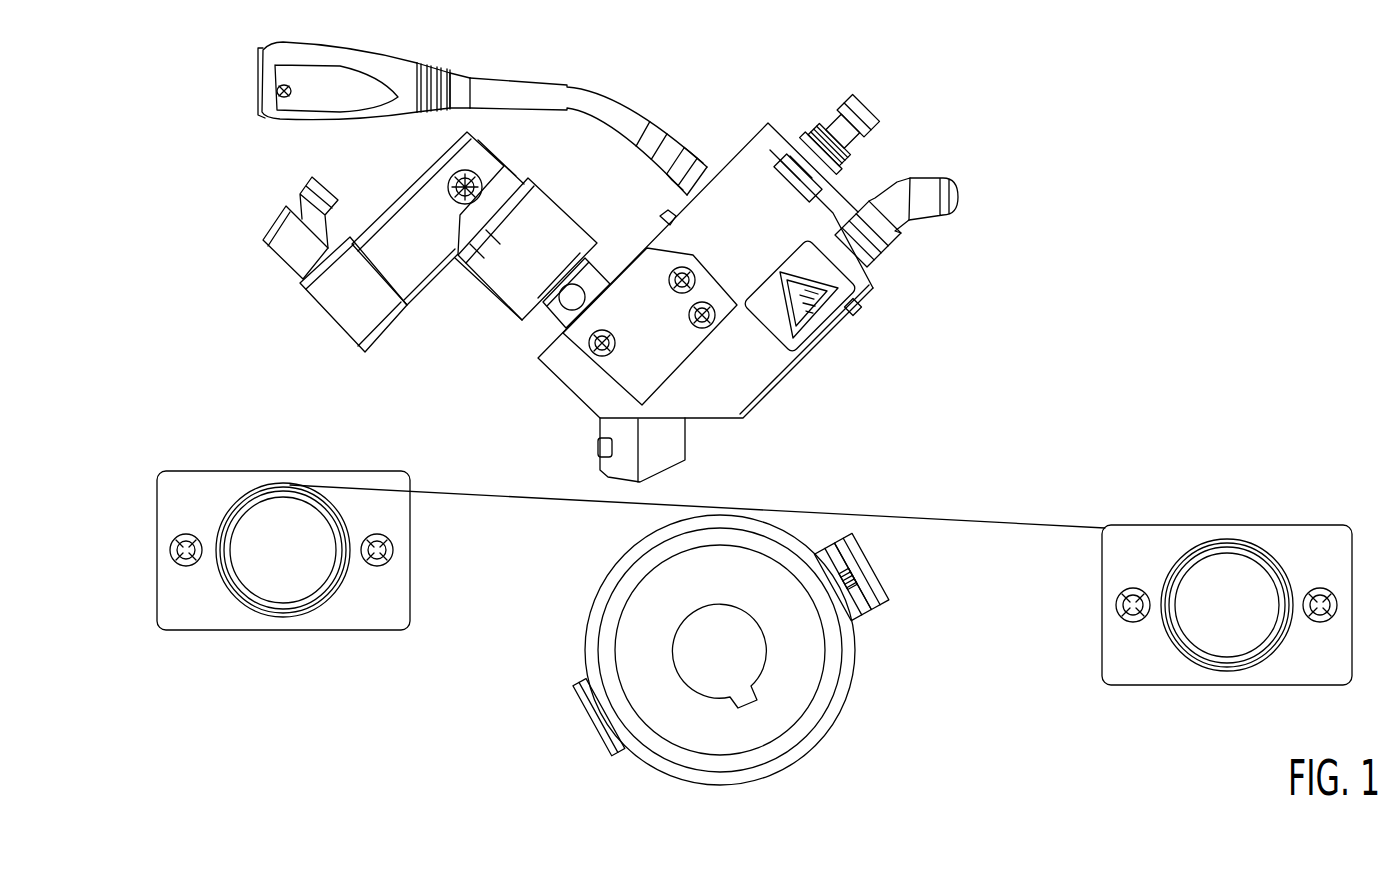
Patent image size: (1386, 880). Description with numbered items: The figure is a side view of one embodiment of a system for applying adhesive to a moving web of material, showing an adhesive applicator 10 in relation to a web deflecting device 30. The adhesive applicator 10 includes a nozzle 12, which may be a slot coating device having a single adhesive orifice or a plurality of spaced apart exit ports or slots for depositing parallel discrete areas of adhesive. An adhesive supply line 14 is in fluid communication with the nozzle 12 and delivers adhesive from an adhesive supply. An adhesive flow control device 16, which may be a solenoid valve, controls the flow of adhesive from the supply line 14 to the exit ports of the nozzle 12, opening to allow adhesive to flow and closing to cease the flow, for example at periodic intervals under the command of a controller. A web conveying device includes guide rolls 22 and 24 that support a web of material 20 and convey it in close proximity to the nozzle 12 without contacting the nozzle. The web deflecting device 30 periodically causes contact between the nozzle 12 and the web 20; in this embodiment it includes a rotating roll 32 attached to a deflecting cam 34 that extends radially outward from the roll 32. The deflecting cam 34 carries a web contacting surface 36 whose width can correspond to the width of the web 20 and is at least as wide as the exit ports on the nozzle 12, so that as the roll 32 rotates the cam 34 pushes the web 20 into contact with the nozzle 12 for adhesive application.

The adhesive applicator 10 is at (787, 360).
The nozzle 12 is at (597, 443).
The adhesive supply line 14 is at (923, 187).
The adhesive flow control device 16 is at (483, 288).
The web of material 20 is at (1008, 525).
The guide roll 22 is at (297, 618).
The guide roll 24 is at (1197, 638).
The web deflecting device 30 is at (600, 770).
The rotating roll 32 is at (795, 755).
The deflecting cam 34 is at (878, 603).
The web contacting surface 36 is at (880, 553).